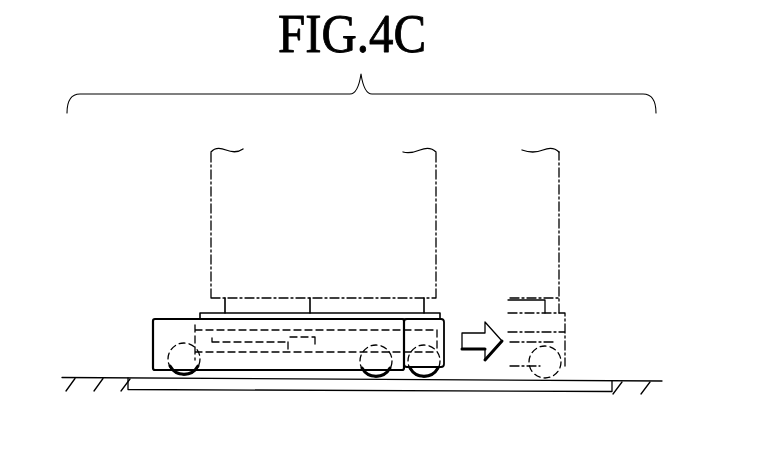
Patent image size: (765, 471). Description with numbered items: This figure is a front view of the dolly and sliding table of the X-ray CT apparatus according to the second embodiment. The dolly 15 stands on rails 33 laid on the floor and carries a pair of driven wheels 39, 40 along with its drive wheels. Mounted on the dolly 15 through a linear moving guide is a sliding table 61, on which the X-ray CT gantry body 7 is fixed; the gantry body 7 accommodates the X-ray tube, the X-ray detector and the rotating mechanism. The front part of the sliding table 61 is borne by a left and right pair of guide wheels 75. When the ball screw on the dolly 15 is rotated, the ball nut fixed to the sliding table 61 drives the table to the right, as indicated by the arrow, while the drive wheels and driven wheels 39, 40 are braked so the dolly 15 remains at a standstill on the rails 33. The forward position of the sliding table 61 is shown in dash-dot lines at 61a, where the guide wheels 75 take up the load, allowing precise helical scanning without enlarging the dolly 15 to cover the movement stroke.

The X-ray CT gantry body 7 is at (211, 227).
The dolly 15 is at (153, 342).
The rails 33 is at (133, 390).
The driven wheel 39 is at (184, 380).
The driven wheel 40 is at (375, 380).
The sliding table 61 is at (444, 318).
The forward position of sliding table 61a is at (562, 312).
The guide wheels 75 is at (418, 380).